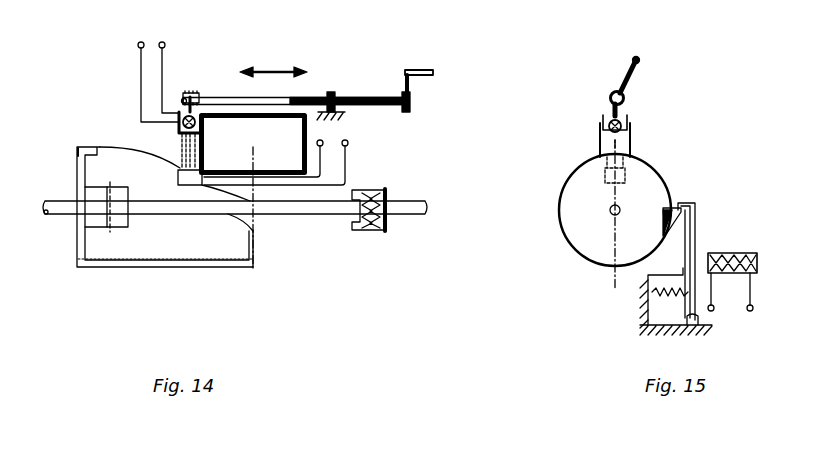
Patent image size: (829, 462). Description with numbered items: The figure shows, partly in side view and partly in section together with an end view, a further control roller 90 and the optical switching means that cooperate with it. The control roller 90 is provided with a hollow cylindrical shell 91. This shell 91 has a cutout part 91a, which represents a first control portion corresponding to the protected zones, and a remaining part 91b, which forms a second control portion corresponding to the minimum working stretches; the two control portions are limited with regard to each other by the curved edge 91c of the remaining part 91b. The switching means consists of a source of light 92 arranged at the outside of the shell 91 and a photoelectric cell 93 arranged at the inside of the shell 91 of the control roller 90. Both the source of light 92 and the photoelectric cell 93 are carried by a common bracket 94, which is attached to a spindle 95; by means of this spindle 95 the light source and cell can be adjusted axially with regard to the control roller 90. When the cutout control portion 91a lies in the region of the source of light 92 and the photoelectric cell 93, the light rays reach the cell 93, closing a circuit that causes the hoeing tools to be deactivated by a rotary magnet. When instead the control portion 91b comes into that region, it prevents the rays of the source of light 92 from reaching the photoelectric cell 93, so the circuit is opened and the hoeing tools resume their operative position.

In FIG. 14, the control roller 90 is at (68, 146).
In FIG. 15, the control roller 90 is at (561, 183).
In FIG. 14, the hollow cylindrical shell 91 is at (238, 270).
In FIG. 14, the cutout part 91a is at (231, 157).
In FIG. 14, the remaining part 91b is at (113, 268).
In FIG. 14, the curved edge 91c is at (140, 148).
In FIG. 14, the source of light 92 is at (176, 106).
In FIG. 15, the source of light 92 is at (600, 120).
In FIG. 14, the photoelectric cell 93 is at (178, 177).
In FIG. 15, the photoelectric cell 93 is at (631, 170).
In FIG. 14, the common bracket 94 is at (308, 134).
In FIG. 14, the spindle 95 is at (352, 96).